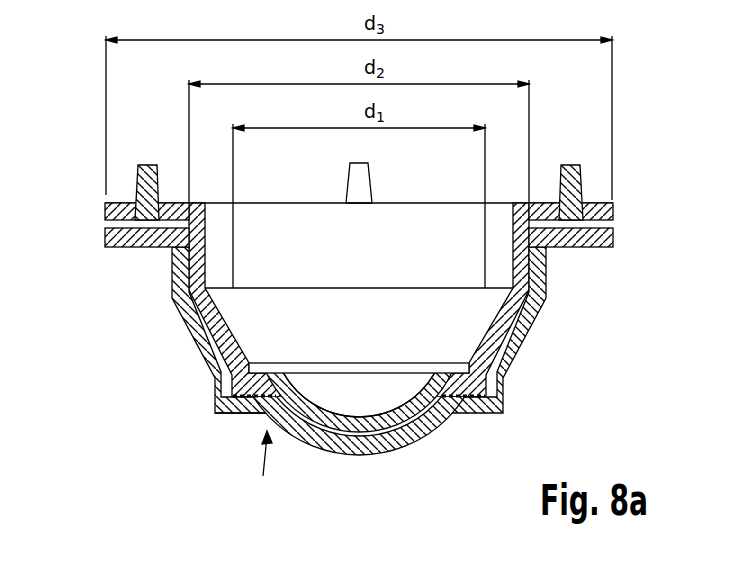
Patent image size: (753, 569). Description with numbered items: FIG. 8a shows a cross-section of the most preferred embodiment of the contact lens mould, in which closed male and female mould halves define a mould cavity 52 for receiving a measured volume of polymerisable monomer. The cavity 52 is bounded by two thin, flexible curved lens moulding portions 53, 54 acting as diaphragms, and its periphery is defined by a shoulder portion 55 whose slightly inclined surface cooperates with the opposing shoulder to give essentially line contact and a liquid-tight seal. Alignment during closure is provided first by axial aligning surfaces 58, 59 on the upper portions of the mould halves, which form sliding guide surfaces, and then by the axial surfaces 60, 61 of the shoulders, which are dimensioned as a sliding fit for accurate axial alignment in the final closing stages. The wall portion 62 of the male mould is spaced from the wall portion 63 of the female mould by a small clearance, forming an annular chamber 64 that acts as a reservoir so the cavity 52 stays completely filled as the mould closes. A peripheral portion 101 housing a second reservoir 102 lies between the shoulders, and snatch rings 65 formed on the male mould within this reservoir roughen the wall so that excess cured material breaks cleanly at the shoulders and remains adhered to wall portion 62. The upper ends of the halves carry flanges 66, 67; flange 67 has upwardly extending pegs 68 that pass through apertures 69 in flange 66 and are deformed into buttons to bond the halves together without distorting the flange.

The mould cavity 52 is at (362, 440).
The curved lens moulding portion 53 is at (333, 432).
The curved lens moulding portion 54 is at (398, 438).
The shoulder portion 55 is at (297, 397).
The axial aligning surface 58 is at (323, 360).
The axial aligning surface 59 is at (339, 309).
The axial surface 60 is at (232, 419).
The axial surface 61 is at (217, 383).
The wall portion 62 is at (223, 323).
The wall portion 63 is at (195, 339).
The annular chamber 64 is at (233, 291).
The snatch rings 65 is at (272, 386).
The flange 66 is at (611, 201).
The flange 67 is at (612, 241).
The pegs 68 is at (137, 175).
The apertures 69 is at (106, 209).
The peripheral portion 101 is at (265, 466).
The second reservoir 102 is at (483, 420).